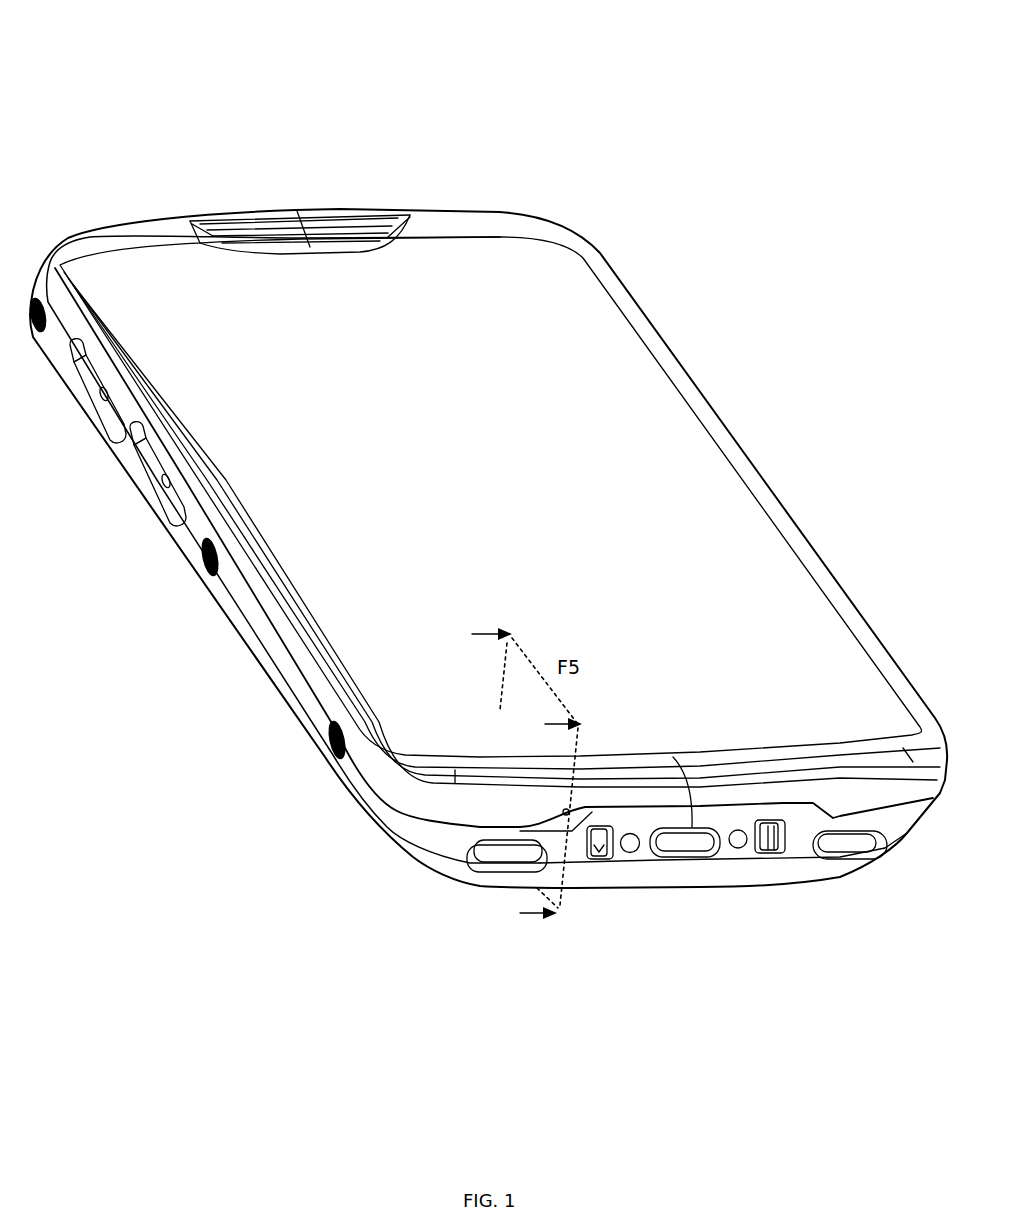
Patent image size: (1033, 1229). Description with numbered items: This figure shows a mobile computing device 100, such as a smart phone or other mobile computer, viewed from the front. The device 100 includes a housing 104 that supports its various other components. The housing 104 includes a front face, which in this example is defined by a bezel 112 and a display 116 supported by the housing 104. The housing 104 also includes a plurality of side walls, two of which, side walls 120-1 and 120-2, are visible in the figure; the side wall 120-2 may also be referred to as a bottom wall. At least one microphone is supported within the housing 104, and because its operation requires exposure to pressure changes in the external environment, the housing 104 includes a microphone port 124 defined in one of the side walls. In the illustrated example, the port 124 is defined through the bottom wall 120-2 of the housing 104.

The mobile computing device 100 is at (193, 118).
The housing 104 is at (448, 189).
The bezel 112 is at (550, 242).
The display 116 is at (617, 363).
The side wall 120-1 is at (297, 664).
The side wall 120-2 is at (615, 875).
The microphone port 124 is at (540, 829).